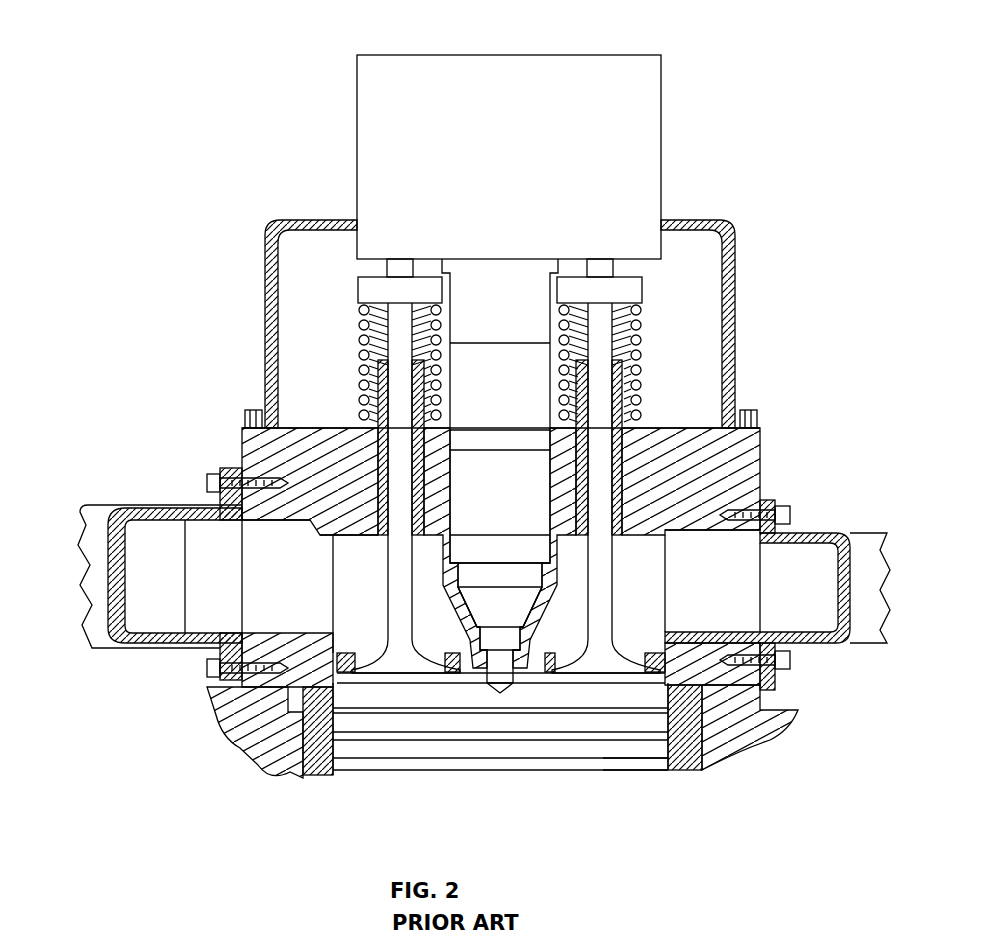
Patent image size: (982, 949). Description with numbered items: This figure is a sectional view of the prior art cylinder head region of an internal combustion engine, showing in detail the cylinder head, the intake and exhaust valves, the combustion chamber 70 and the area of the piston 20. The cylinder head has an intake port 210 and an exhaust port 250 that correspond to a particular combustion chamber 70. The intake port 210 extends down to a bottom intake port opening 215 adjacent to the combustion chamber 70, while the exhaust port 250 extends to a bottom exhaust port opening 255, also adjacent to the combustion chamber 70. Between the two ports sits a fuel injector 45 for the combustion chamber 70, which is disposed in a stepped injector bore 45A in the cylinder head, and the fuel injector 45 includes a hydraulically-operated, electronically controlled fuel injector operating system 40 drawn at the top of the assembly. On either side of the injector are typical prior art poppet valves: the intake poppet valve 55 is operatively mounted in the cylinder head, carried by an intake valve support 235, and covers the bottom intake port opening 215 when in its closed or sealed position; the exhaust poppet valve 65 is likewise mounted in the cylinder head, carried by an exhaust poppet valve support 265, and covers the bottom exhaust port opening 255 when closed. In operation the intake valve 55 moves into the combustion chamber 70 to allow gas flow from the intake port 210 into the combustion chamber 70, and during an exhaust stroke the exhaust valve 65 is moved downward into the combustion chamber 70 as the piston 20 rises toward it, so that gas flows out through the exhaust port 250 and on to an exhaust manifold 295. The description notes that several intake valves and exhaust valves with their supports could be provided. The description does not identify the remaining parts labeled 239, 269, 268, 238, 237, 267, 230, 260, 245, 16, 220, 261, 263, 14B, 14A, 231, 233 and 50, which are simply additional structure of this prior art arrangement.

The fuel injector operating system 40 is at (560, 55).
The first spring retainer 239 is at (425, 292).
The second spring retainer 269 is at (627, 285).
The second valve spring 268 is at (648, 330).
The exhaust poppet valve support 265 is at (640, 448).
The intake valve support 235 is at (358, 448).
The first valve stem 238 is at (440, 393).
The fuel injector 45 is at (525, 407).
The injector bore 237 is at (448, 470).
The injector body housing 267 is at (575, 495).
The first valve body 230 is at (398, 563).
The intake poppet valve 55 is at (398, 578).
The bottom intake port opening 215 is at (380, 630).
The stepped injector bore 45A is at (535, 594).
The second valve body 260 is at (650, 573).
The exhaust poppet valve 65 is at (617, 592).
The exhaust valve 245 is at (645, 690).
The exhaust manifold 295 is at (852, 573).
The exhaust port 250 is at (828, 590).
The flange 16 is at (790, 700).
The intake valve seat 220 is at (440, 680).
The combustion chamber 70 is at (545, 707).
The intake valve head 261 is at (390, 665).
The bottom exhaust port opening 255 is at (560, 690).
The exhaust valve seat 263 is at (605, 690).
The cylinder head second portion 14B is at (352, 778).
The cylinder head first portion 14A is at (690, 772).
The intake port 231 is at (363, 690).
The piston 20 is at (420, 727).
The intake valve 233 is at (440, 675).
The intake port 210 is at (230, 600).
The intake pipe 50 is at (108, 530).